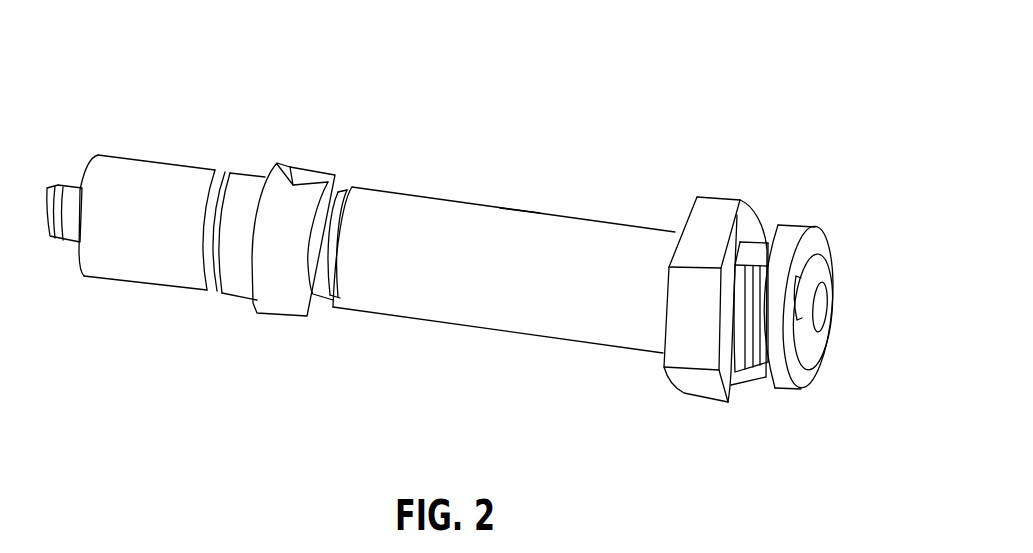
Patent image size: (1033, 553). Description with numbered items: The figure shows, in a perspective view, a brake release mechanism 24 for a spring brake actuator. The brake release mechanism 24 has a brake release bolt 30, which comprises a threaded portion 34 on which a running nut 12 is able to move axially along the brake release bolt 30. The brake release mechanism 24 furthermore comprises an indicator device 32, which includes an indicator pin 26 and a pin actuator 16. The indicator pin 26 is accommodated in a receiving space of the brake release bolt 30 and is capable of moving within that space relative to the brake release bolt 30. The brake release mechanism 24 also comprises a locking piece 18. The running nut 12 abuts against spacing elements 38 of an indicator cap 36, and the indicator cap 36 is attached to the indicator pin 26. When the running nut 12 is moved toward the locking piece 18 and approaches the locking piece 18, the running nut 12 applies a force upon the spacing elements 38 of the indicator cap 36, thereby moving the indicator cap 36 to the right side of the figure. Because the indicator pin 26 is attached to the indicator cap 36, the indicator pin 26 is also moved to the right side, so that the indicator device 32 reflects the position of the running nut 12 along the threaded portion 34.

The running nut 12 is at (704, 215).
The pin actuator 16 is at (840, 335).
The locking piece 18 is at (795, 242).
The brake release mechanism 24 is at (786, 96).
The indicator pin 26 is at (68, 228).
The brake release bolt 30 is at (420, 292).
The indicator device 32 is at (848, 268).
The threaded portion 34 is at (518, 200).
The indicator cap 36 is at (812, 370).
The spacing elements 38 is at (763, 367).